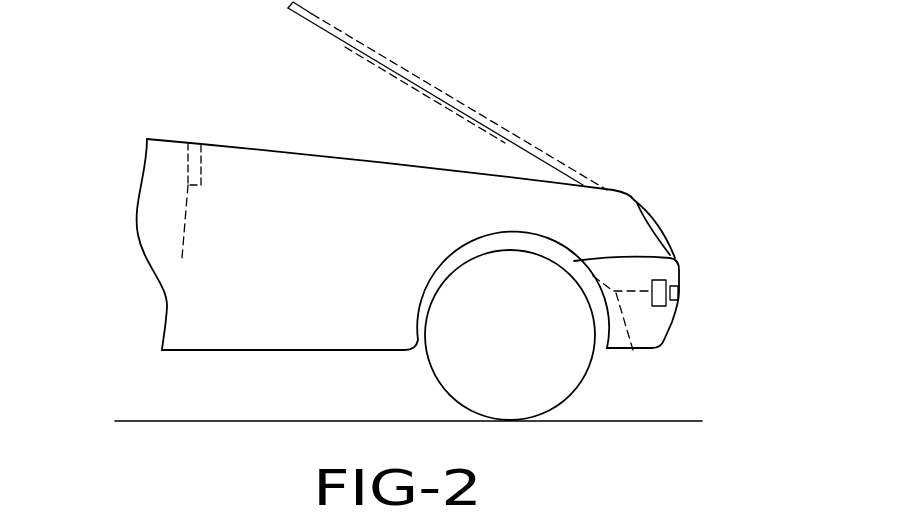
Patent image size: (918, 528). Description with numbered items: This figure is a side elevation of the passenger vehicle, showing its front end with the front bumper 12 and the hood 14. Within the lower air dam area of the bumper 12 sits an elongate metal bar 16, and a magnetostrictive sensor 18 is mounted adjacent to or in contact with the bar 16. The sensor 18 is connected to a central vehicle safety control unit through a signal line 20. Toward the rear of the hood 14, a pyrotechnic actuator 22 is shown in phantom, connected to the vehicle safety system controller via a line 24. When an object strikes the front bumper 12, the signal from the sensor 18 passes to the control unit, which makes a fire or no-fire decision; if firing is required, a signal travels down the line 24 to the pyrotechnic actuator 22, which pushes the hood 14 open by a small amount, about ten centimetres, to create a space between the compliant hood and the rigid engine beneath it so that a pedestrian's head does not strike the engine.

The front bumper 12 is at (668, 333).
The hood 14 is at (470, 113).
The elongate metal bar 16 is at (678, 292).
The magnetostrictive sensor 18 is at (668, 273).
The signal line 20 is at (633, 350).
The pyrotechnic actuator 22 is at (200, 143).
The line 24 is at (183, 218).